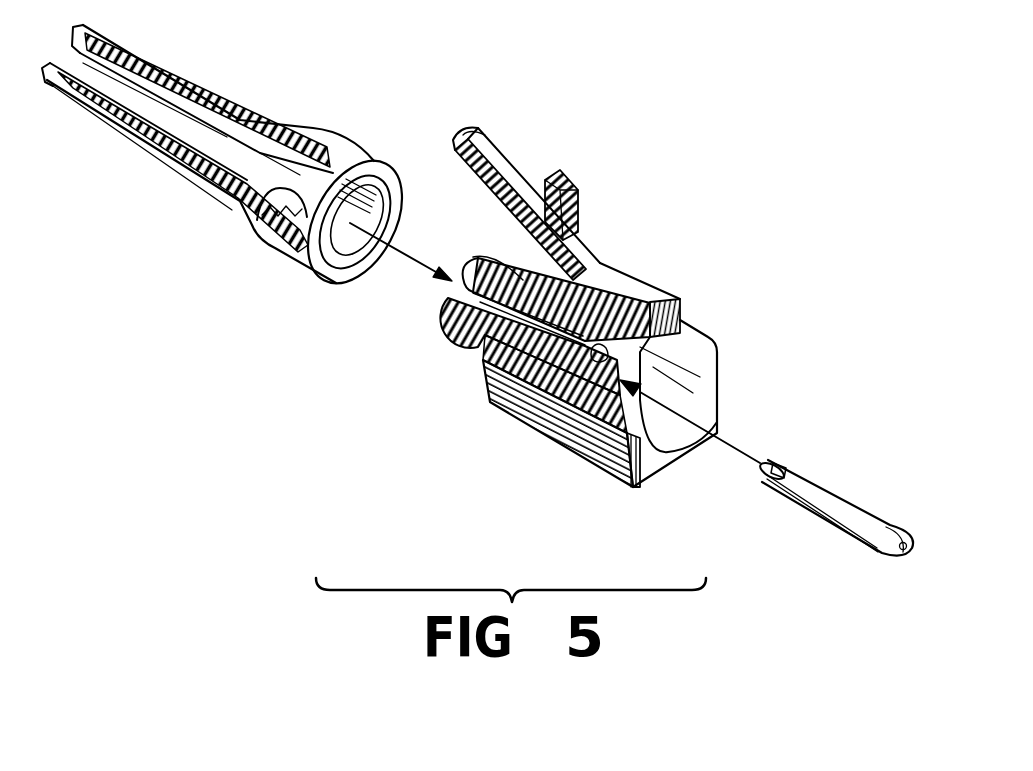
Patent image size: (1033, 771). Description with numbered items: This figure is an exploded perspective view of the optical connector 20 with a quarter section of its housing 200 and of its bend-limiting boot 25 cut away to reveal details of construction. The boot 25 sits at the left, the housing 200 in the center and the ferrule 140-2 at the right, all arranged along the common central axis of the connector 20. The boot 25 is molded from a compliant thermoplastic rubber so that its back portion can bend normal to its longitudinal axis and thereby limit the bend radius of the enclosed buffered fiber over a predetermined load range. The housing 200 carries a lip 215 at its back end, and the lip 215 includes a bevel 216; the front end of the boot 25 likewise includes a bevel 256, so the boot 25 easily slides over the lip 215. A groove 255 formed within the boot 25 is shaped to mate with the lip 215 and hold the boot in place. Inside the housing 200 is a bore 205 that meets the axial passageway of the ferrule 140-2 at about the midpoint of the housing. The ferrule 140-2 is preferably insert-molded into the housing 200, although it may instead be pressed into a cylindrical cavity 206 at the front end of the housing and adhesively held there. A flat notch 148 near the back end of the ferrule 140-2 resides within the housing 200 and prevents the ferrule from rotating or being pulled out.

The optical connector 20 is at (675, 183).
The bend-limiting boot 25 is at (183, 163).
The groove 255 is at (257, 218).
The bevel 256 is at (347, 263).
The bevel 216 is at (473, 262).
The lip 215 is at (443, 301).
The bore 205 is at (480, 370).
The cylindrical cavity 206 is at (557, 403).
The housing 200 is at (675, 375).
The notch 148 is at (789, 462).
The ferrule 140-2 is at (820, 522).